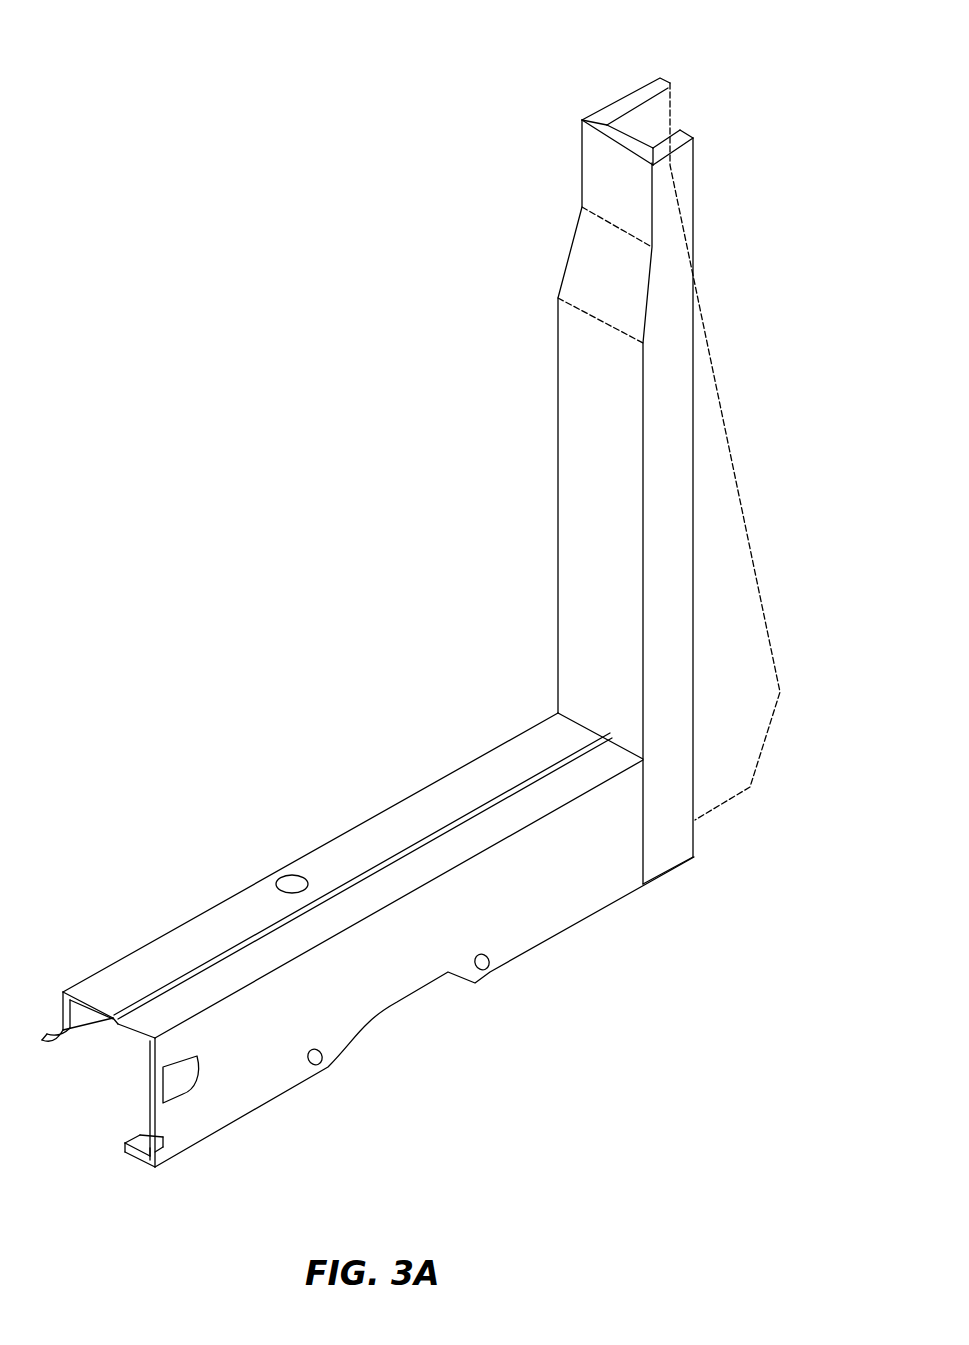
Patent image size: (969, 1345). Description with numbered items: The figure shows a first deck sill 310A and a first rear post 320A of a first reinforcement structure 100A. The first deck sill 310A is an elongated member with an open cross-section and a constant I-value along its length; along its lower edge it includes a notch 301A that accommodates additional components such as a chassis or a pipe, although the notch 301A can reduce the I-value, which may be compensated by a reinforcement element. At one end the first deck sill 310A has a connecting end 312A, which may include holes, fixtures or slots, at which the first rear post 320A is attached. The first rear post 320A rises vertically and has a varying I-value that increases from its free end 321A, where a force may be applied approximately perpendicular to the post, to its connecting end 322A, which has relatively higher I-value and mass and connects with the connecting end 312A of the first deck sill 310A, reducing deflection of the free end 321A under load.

The first reinforcement structure 100A is at (150, 86).
The first deck sill 310A is at (243, 1090).
The connecting end 312A is at (548, 725).
The notch 301A is at (398, 1002).
The first rear post 320A is at (700, 172).
The free end 321A is at (582, 141).
The connecting end 322A is at (688, 850).